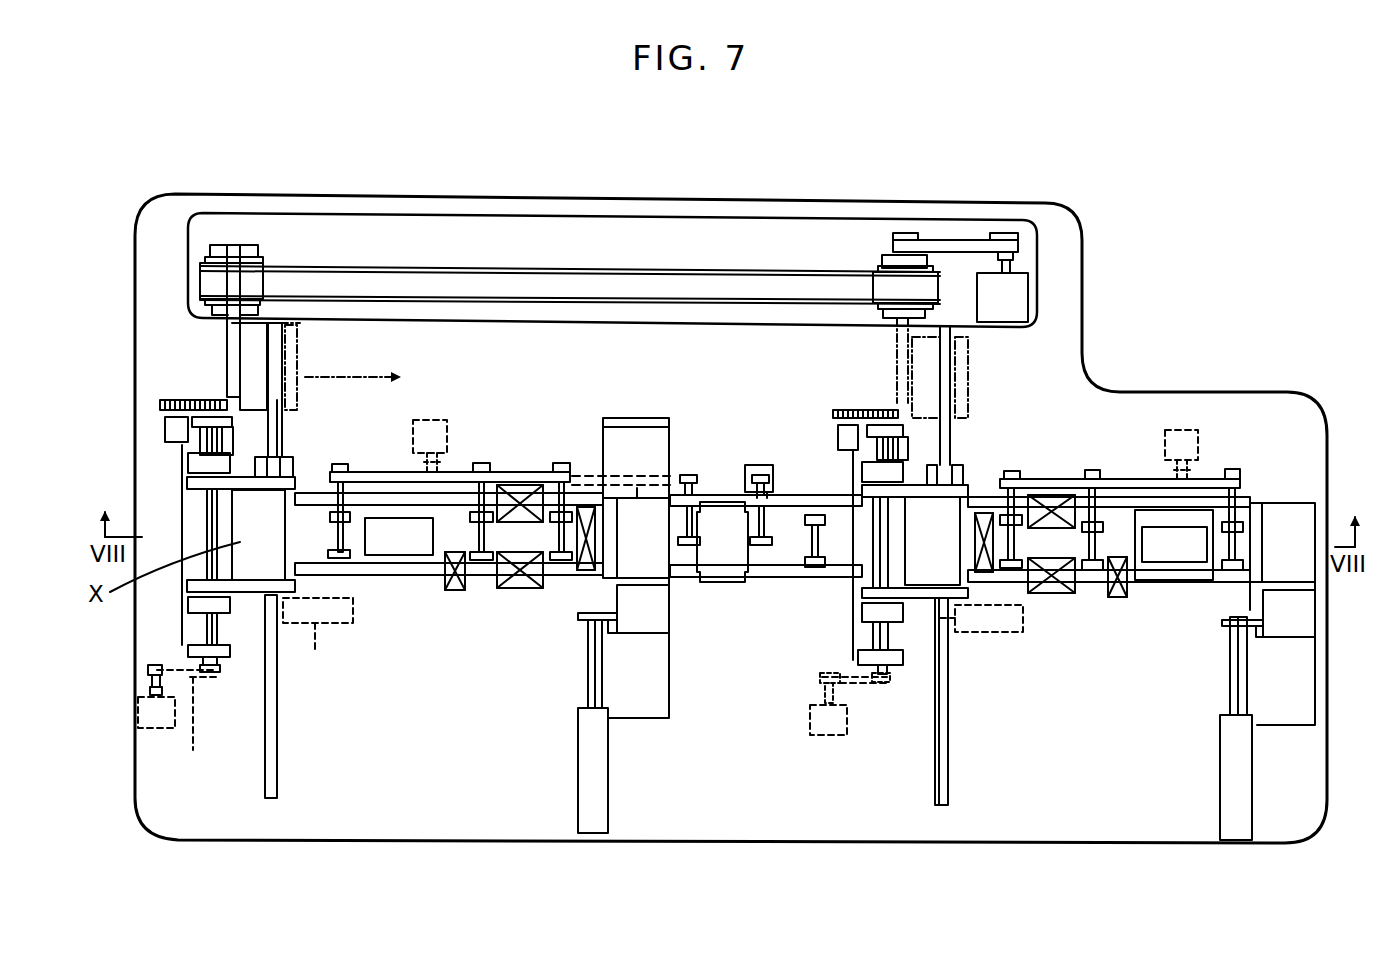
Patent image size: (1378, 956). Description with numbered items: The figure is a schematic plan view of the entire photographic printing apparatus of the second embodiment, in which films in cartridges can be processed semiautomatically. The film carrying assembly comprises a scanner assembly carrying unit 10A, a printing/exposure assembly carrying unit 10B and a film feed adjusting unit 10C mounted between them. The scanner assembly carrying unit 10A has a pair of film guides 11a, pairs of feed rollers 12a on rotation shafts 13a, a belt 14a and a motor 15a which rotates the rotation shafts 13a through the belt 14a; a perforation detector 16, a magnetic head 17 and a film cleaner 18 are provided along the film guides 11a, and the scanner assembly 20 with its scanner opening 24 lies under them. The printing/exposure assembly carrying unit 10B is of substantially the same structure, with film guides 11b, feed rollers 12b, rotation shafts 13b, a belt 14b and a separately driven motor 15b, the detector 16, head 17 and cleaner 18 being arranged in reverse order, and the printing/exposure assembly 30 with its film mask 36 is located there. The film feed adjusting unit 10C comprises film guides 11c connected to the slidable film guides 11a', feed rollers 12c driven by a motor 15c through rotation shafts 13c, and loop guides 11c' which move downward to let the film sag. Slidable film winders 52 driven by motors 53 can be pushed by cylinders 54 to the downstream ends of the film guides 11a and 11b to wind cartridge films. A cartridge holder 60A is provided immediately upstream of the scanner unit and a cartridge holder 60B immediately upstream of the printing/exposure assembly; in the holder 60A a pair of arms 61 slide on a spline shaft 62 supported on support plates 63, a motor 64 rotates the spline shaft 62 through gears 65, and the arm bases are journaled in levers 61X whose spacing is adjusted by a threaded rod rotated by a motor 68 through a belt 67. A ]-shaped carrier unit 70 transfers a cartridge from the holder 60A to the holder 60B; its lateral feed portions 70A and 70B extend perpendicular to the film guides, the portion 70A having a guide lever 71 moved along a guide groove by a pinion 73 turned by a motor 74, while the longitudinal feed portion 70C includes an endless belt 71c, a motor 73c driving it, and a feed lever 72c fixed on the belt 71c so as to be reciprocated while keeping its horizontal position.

The carrier unit 70 is at (503, 252).
The lateral feed portion 70A is at (307, 408).
The lateral feed portion 70B is at (982, 392).
The longitudinal feed portion 70C is at (308, 252).
The endless belt 71c is at (618, 283).
The feed lever 72c is at (230, 343).
The pinion 73 is at (257, 598).
The motor 73c is at (1020, 297).
The guide lever 71 is at (277, 757).
The motor 74 is at (653, 639).
The cartridge holder 60A is at (183, 549).
The cartridge holder 60B is at (852, 402).
The gears 65 is at (180, 398).
The motor 64 is at (168, 423).
The spline shaft 62 is at (207, 525).
The arms 61 is at (185, 587).
The levers 61X is at (192, 607).
The support plates 63 is at (188, 653).
The motor 68 is at (148, 731).
The belt 67 is at (192, 727).
The film guides 11a is at (772, 574).
The slidable film guides 11a' is at (653, 436).
The film guides 11b is at (1090, 600).
The film guides 11c is at (766, 580).
The loop guides 11c' is at (740, 577).
The scanner assembly 20 is at (407, 560).
The scanner opening 24 is at (387, 547).
The perforation detector 16 is at (453, 587).
The magnetic head 17 is at (520, 513).
The film cleaner 18 is at (580, 570).
The belt 14a is at (452, 475).
The belt 14b is at (1115, 478).
The rotation shafts 13a is at (337, 537).
The rotation shafts 13b is at (1003, 517).
The rotation shafts 13c is at (788, 500).
The feed rollers 12a is at (343, 553).
The feed rollers 12b is at (1032, 547).
The feed rollers 12c is at (818, 548).
The motor 15a is at (427, 418).
The motor 15b is at (1183, 430).
The motor 15c is at (748, 468).
The scanner assembly carrying unit 10A is at (542, 445).
The printing/exposure assembly carrying unit 10B is at (1080, 435).
The film feed adjusting unit 10C is at (755, 450).
The film winders 52 is at (658, 560).
The motors 53 is at (658, 618).
The cylinders 54 is at (583, 772).
The printing/exposure assembly 30 is at (1170, 590).
The film mask 36 is at (1190, 590).